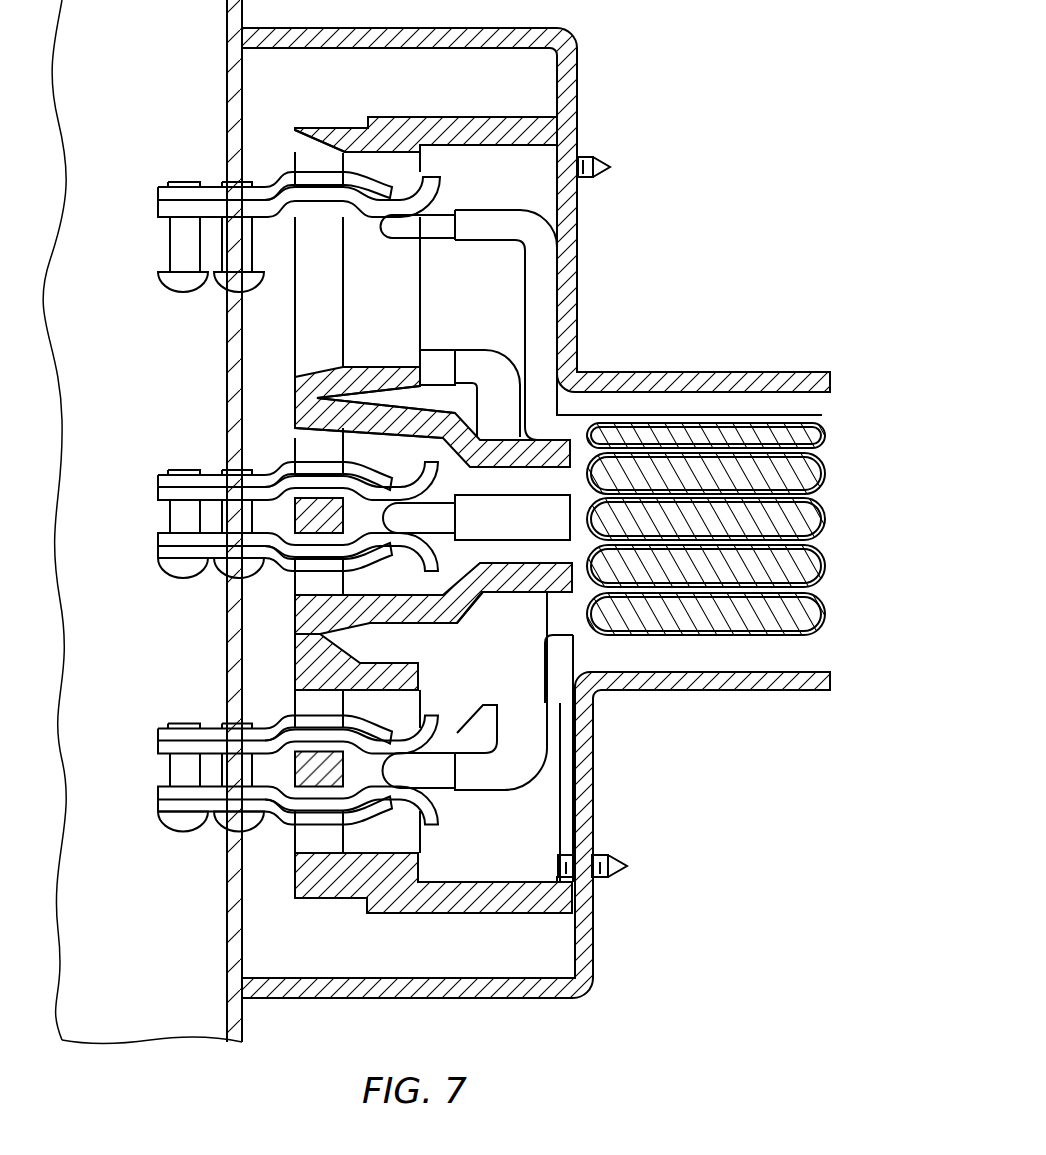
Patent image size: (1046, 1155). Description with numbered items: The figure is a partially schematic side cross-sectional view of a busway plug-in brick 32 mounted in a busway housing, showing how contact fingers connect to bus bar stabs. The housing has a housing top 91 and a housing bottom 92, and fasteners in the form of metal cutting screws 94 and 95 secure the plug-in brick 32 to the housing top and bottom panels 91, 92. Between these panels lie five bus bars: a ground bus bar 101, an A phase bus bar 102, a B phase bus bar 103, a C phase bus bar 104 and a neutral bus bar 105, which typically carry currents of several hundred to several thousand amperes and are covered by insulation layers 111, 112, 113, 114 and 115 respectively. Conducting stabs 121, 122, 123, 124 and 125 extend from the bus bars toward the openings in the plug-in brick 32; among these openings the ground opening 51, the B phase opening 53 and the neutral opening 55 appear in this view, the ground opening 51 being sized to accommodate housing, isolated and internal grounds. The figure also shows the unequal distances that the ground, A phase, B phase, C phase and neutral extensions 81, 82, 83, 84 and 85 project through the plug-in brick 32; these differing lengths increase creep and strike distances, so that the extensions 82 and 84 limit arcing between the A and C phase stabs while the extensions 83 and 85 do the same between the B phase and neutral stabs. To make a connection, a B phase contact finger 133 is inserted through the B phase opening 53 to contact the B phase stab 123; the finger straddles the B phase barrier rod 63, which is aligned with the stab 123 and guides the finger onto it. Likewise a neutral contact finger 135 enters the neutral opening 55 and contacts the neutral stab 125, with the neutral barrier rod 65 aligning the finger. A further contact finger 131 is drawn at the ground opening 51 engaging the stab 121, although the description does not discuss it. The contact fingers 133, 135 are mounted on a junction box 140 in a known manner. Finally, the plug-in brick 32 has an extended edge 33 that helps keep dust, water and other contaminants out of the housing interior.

The plug-in brick 32 is at (408, 118).
The extended edge 33 is at (545, 882).
The ground opening 51 is at (293, 147).
The B phase opening 53 is at (300, 428).
The neutral opening 55 is at (300, 683).
The B phase barrier rod 63 is at (318, 512).
The neutral barrier rod 65 is at (299, 769).
The ground extension 81 is at (428, 362).
The A phase extension 82 is at (421, 398).
The B phase extension 83 is at (560, 462).
The C phase extension 84 is at (575, 650).
The neutral extension 85 is at (418, 672).
The housing top 91 is at (710, 372).
The housing bottom 92 is at (735, 692).
The metal cutting screw 94 is at (598, 178).
The metal cutting screw 95 is at (612, 866).
The ground bus bar 101 is at (832, 430).
The A phase bus bar 102 is at (832, 472).
The B phase bus bar 103 is at (832, 516).
The C phase bus bar 104 is at (832, 563).
The neutral bus bar 105 is at (832, 609).
The insulation layer 111 is at (822, 440).
The insulation layer 112 is at (822, 480).
The insulation layer 113 is at (822, 524).
The insulation layer 114 is at (822, 572).
The insulation layer 115 is at (822, 619).
The conducting stab 121 is at (482, 213).
The A phase stab 122 is at (504, 344).
The B phase stab 123 is at (524, 529).
The C phase stab 124 is at (578, 560).
The neutral stab 125 is at (451, 785).
The contact hook 131 is at (438, 178).
The B phase contact finger 133 is at (432, 570).
The neutral contact finger 135 is at (317, 758).
The junction box 140 is at (156, 343).